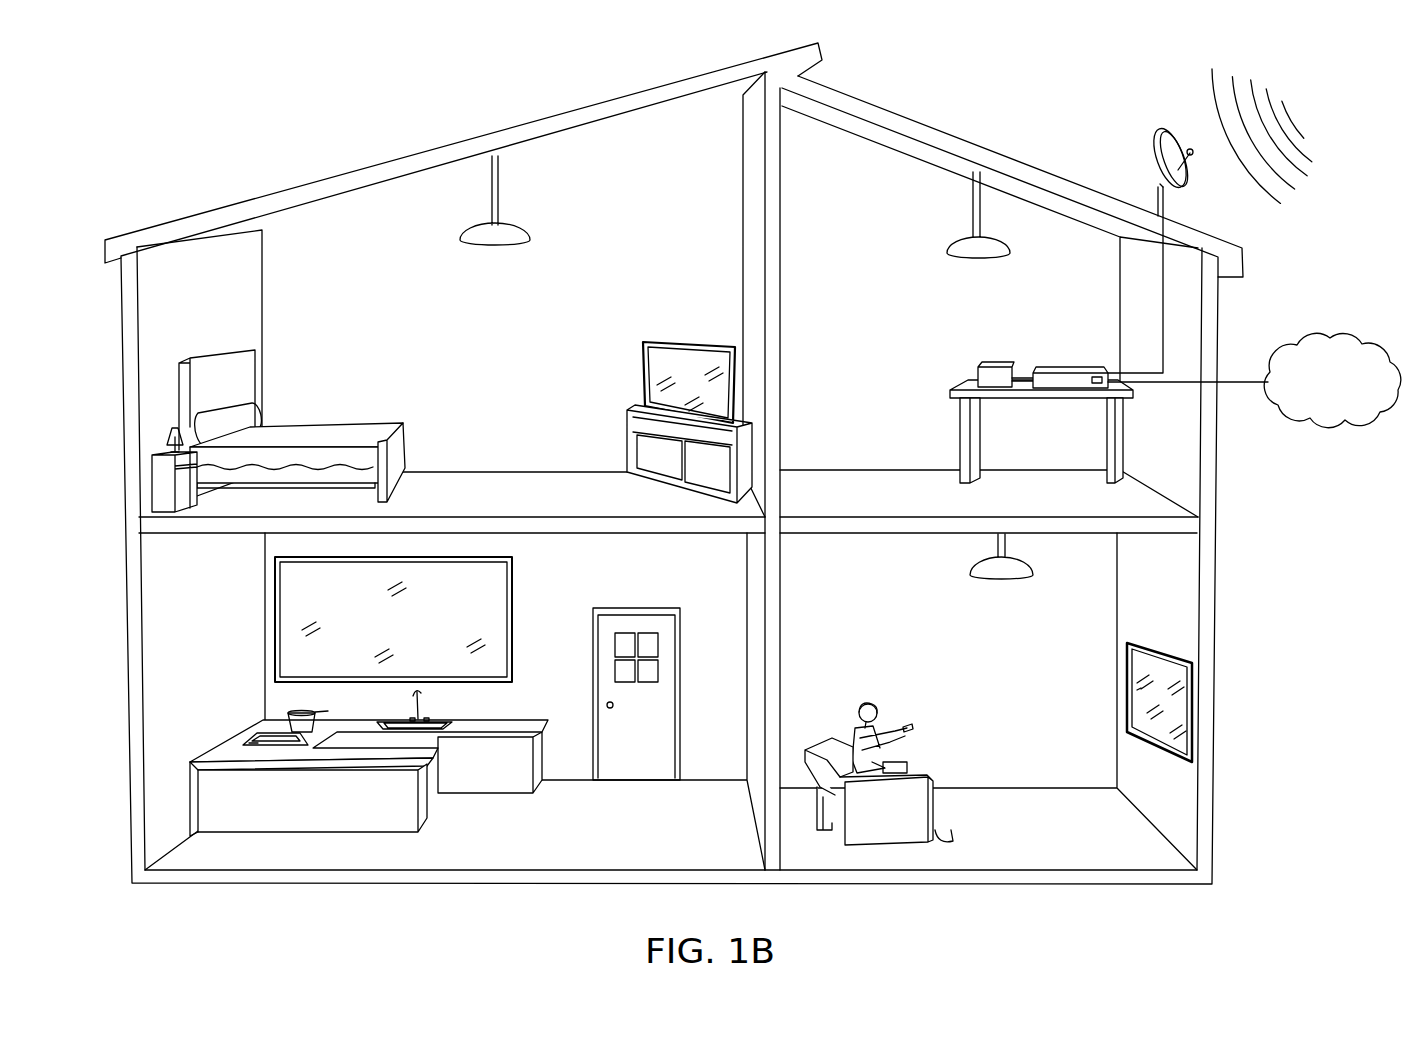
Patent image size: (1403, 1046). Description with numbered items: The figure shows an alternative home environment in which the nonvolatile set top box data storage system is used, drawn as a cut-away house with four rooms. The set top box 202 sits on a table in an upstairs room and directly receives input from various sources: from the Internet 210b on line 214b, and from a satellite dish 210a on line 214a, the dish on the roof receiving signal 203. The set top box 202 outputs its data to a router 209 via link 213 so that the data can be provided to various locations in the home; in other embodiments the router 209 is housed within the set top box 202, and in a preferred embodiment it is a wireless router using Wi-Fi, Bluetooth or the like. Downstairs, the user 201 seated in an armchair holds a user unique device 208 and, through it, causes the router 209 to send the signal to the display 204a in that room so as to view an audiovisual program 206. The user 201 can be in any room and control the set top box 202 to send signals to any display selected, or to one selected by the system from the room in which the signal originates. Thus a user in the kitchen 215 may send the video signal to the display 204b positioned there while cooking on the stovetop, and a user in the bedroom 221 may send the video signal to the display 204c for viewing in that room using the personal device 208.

The user 201 is at (878, 697).
The set top box 202 is at (1068, 367).
The signal 203 is at (1283, 73).
The display 204a is at (1155, 645).
The display 204b is at (513, 612).
The display 204c is at (655, 339).
The audiovisual program 206 is at (1134, 693).
The user unique device 208 is at (908, 730).
The router 209 is at (993, 363).
The satellite dish 210a is at (1172, 145).
The Internet 210b is at (1320, 335).
The link 213 is at (1025, 373).
The line 214a is at (1163, 278).
The line 214b is at (1237, 387).
The kitchen 215 is at (713, 594).
The bedroom 221 is at (440, 328).